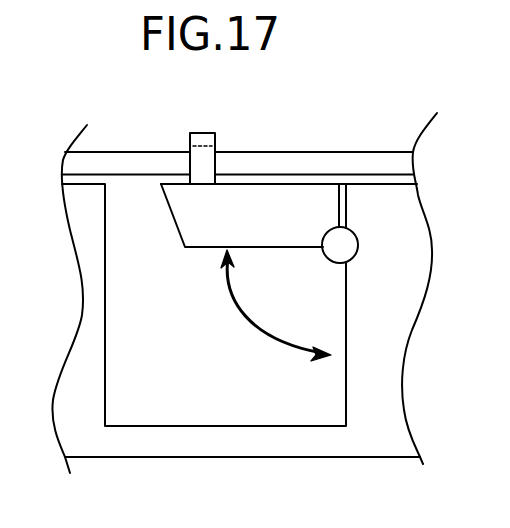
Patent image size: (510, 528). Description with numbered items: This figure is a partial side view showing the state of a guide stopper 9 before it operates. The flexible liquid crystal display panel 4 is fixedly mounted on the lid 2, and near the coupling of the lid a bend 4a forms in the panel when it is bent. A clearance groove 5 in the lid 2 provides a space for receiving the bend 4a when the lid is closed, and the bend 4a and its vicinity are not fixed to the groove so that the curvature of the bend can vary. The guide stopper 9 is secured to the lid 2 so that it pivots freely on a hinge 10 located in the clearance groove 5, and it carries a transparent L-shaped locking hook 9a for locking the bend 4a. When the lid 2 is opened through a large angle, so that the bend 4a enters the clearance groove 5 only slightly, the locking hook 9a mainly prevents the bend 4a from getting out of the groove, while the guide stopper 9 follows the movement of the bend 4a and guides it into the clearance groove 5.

The lid 2 is at (148, 438).
The flexible liquid crystal display panel 4 is at (338, 158).
The bend 4a is at (153, 150).
The clearance groove 5 is at (218, 365).
The guide stopper 9 is at (265, 217).
The locking hook 9a is at (205, 163).
The hinge 10 is at (352, 247).